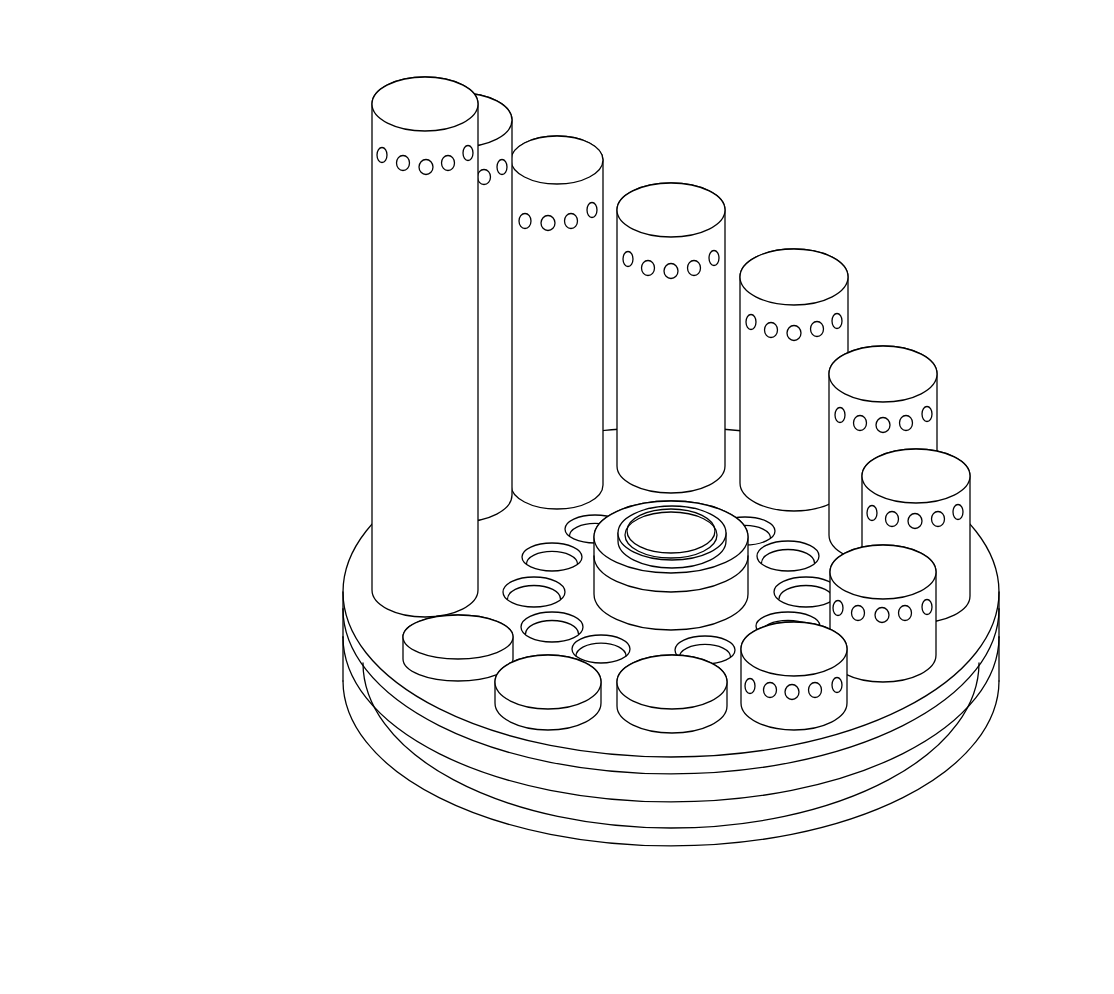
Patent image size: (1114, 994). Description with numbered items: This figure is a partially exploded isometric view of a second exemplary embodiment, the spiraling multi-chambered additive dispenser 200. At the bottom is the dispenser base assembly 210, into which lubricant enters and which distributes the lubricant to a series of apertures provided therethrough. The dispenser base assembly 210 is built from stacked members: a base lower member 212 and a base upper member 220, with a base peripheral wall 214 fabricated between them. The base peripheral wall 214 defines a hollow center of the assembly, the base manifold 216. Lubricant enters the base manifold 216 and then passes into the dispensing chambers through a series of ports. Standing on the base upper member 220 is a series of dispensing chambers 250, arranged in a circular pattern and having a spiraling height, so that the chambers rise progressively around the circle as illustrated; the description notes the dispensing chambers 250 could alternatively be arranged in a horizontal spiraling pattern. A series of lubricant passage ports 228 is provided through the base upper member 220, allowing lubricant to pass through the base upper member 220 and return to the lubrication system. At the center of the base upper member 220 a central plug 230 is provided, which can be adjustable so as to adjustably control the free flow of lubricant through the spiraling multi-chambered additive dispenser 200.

The spiraling multi-chambered additive dispenser 200 is at (292, 156).
The dispenser base assembly 210 is at (338, 589).
The base lower member 212 is at (375, 770).
The base peripheral wall 214 is at (920, 773).
The base manifold 216 is at (903, 738).
The base upper member 220 is at (993, 637).
The lubricant passage ports 228 is at (727, 557).
The central plug 230 is at (748, 528).
The dispensing chambers 250 is at (953, 543).